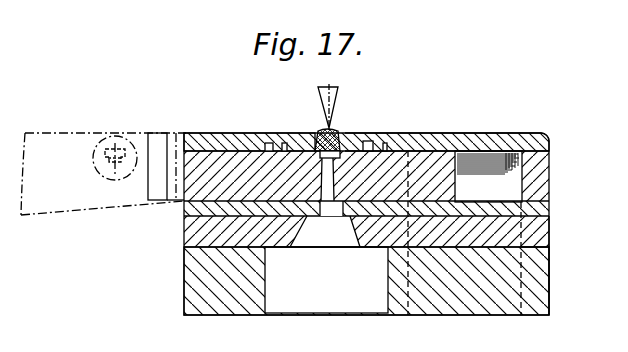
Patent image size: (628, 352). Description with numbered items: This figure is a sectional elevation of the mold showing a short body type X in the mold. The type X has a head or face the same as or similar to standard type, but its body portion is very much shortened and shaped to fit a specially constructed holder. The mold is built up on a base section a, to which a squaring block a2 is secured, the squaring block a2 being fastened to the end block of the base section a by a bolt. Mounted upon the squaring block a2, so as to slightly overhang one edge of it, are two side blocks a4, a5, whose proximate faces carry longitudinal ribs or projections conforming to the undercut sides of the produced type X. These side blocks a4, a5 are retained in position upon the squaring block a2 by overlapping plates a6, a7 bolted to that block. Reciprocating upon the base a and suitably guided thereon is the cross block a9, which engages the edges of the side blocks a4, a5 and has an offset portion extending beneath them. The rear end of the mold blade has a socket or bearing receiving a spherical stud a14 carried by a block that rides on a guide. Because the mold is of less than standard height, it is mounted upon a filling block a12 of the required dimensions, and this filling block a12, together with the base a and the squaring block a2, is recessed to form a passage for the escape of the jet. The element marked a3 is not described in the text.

The base section a is at (337, 146).
The squaring block a2 is at (495, 177).
The nozzle insert a3 is at (316, 135).
The side block a4 is at (294, 134).
The side block a5 is at (364, 135).
The overlapping plate a6 is at (240, 143).
The overlapping plate a7 is at (452, 140).
The cross block a9 is at (491, 138).
The filling block a12 is at (462, 299).
The spherical stud a14 is at (533, 248).
The short body type X is at (336, 138).